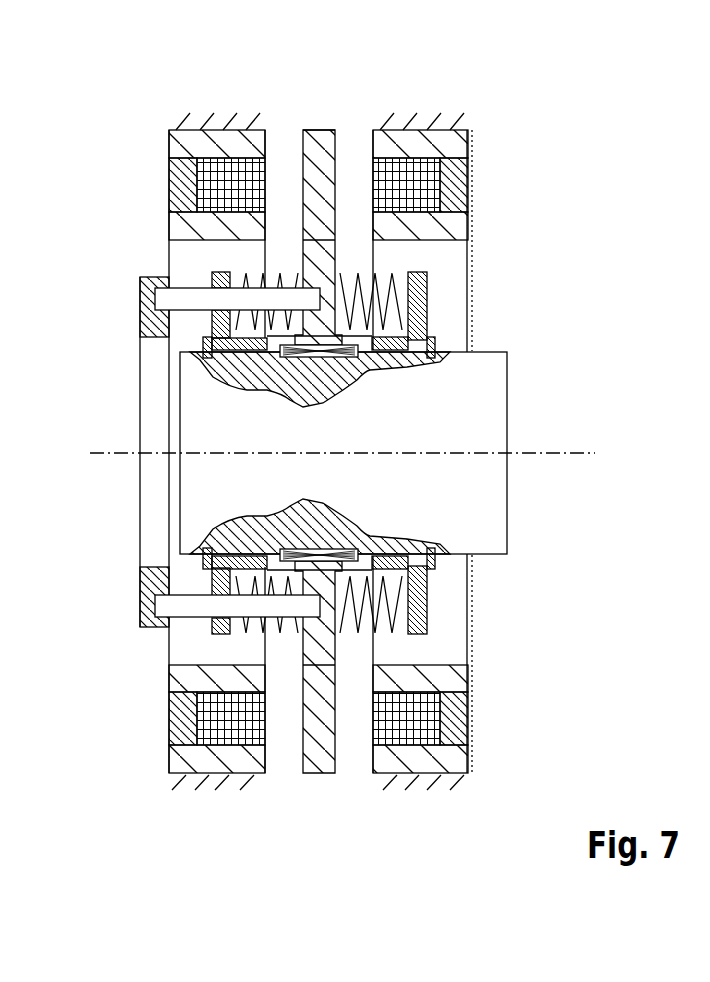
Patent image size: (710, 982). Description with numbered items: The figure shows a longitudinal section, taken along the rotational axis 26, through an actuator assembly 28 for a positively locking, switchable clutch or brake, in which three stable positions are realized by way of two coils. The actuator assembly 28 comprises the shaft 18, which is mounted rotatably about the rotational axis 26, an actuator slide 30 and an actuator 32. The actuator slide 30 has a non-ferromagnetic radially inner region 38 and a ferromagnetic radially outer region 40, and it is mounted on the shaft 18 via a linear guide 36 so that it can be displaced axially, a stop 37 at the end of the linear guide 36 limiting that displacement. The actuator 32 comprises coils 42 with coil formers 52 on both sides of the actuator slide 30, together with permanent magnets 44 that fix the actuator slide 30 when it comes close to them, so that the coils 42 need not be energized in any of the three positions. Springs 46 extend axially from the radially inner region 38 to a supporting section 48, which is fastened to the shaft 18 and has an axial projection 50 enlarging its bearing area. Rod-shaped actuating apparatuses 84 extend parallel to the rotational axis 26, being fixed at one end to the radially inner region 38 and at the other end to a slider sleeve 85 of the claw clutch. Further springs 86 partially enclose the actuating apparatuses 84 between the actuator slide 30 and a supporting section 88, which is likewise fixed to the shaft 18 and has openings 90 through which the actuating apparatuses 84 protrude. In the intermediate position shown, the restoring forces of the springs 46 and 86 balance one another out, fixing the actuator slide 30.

The shaft 18 is at (485, 483).
The rotational axis 26 is at (582, 453).
The actuator assembly 28 is at (485, 78).
The actuator slide 30 is at (333, 93).
The actuator 32 is at (520, 232).
The linear guide 36 is at (378, 368).
The stop 37 is at (206, 345).
The radially inner region 38 is at (322, 246).
The radially outer region 40 is at (312, 140).
The coil 42 is at (210, 733).
The permanent magnet 44 is at (182, 197).
The spring 46 is at (412, 279).
The supporting section 48 is at (420, 582).
The axial projection 50 is at (430, 328).
The coil former 52 is at (232, 142).
The actuating apparatus 84 is at (168, 298).
The slider sleeve 85 is at (152, 410).
The spring 86 is at (243, 272).
The supporting section 88 is at (214, 572).
The opening 90 is at (214, 585).